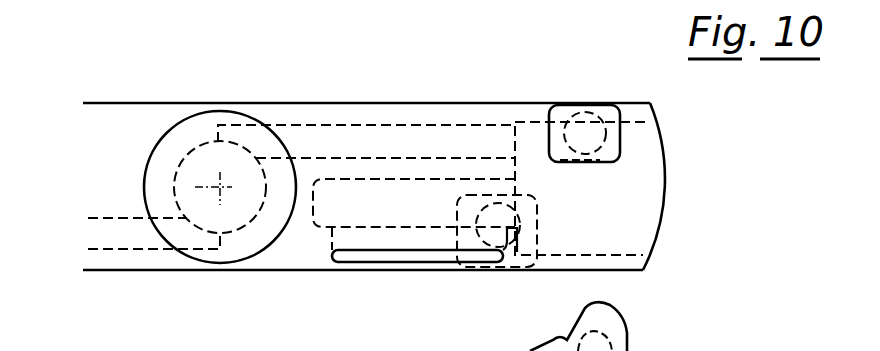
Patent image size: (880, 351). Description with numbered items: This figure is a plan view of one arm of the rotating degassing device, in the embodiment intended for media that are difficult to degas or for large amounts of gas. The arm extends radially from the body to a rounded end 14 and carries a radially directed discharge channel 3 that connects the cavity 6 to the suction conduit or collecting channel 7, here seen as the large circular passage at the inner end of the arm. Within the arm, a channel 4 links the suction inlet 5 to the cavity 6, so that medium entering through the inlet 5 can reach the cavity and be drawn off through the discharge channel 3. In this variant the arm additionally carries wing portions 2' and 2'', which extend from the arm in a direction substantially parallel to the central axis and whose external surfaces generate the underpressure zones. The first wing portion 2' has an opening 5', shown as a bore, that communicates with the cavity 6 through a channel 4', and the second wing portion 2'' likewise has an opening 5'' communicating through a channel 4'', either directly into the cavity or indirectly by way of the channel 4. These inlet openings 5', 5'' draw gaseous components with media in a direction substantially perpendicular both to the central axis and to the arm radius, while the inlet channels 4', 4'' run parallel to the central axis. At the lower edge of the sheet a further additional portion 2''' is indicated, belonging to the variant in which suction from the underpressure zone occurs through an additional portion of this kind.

The channel 3 is at (357, 142).
The channel 4 is at (393, 263).
The inlet 5 is at (417, 291).
The cavity 6 is at (627, 197).
The collecting channel 7 is at (222, 205).
The rounded end 14 is at (665, 153).
The wing portion 2' is at (577, 104).
The channel 4' is at (604, 100).
The opening 5' is at (645, 173).
The wing portion 2'' is at (499, 257).
The channel 4'' is at (473, 261).
The opening 5'' is at (493, 280).
The additional portion 2''' is at (603, 326).